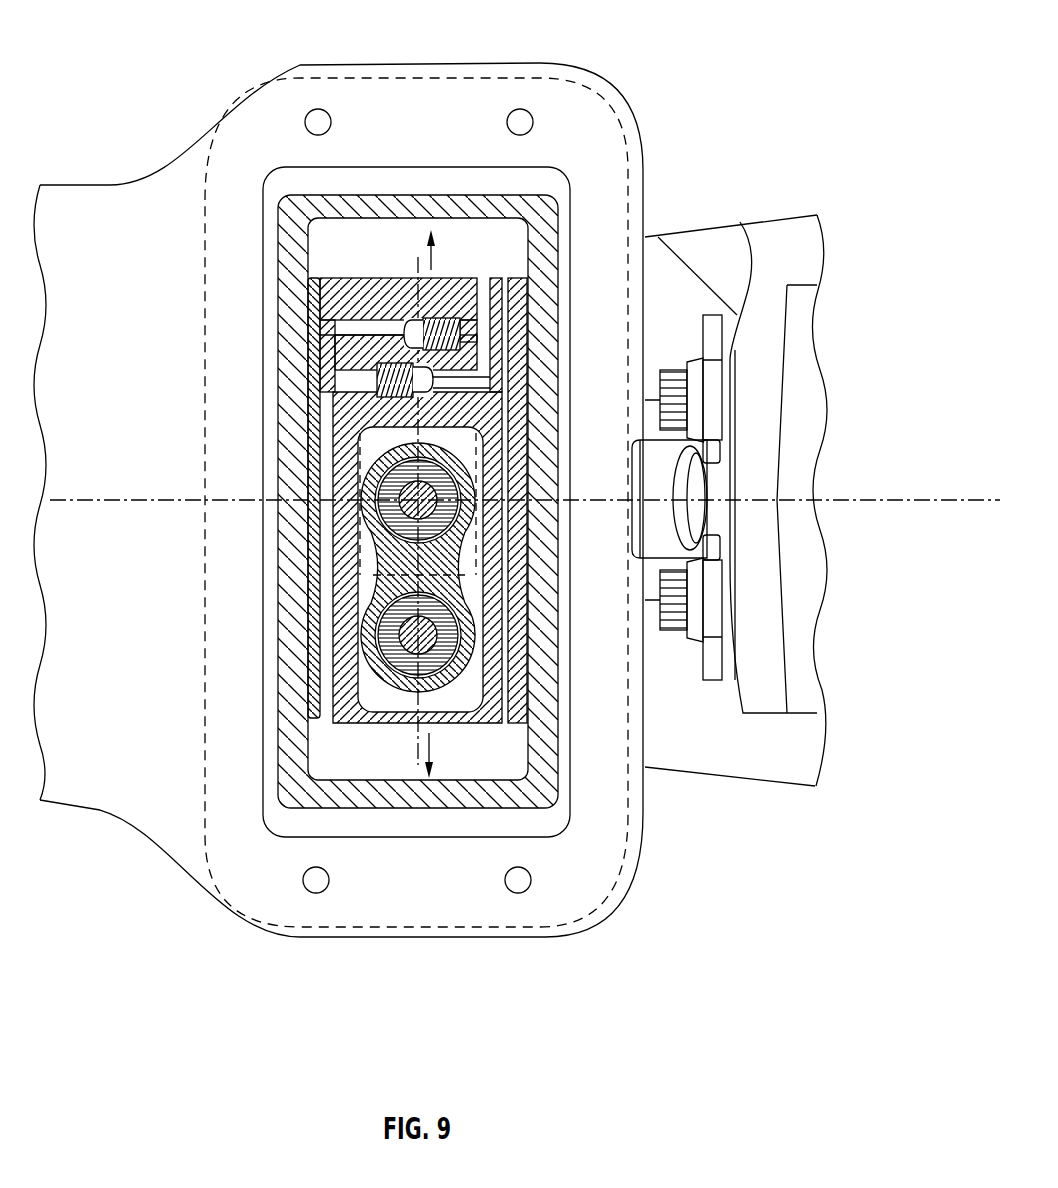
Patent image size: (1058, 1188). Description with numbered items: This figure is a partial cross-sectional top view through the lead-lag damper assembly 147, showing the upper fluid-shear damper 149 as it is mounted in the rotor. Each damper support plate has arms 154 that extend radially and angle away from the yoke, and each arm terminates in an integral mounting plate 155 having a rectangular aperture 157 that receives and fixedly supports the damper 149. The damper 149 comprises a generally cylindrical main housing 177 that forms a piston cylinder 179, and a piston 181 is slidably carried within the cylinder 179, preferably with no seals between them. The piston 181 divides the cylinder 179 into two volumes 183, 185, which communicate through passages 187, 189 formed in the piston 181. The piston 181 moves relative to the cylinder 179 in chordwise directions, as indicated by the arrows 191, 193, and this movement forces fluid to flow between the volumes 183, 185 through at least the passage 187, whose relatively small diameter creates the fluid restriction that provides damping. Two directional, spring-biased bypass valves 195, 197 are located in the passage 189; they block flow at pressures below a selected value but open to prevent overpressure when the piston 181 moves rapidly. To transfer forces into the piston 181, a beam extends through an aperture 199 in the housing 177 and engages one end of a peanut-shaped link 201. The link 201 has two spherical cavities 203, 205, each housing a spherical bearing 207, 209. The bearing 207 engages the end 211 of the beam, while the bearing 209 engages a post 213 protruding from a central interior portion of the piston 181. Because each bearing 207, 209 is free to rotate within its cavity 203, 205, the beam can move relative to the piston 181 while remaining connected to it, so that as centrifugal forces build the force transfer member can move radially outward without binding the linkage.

The lead-lag damper assembly 147 is at (300, 185).
The upper damper 149 is at (541, 185).
The arms 154 is at (120, 198).
The mounting plate 155 is at (455, 937).
The rectangular aperture 157 is at (404, 834).
The main housing 177 is at (290, 740).
The piston cylinder 179 is at (310, 265).
The piston 181 is at (378, 262).
The cylinder volume 183 is at (463, 237).
The cylinder volume 185 is at (333, 767).
The passage 187 is at (512, 350).
The passage 189 is at (306, 595).
The arrow 191 is at (435, 262).
The arrow 193 is at (433, 752).
The bypass valve 195 is at (433, 379).
The bypass valve 197 is at (392, 337).
The aperture 199 is at (368, 468).
The peanut-shaped link 201 is at (375, 518).
The spherical cavity 203 is at (457, 488).
The spherical cavity 205 is at (397, 668).
The spherical bearing 207 is at (380, 486).
The spherical bearing 209 is at (393, 650).
The end of beam 211 is at (430, 535).
The post 213 is at (437, 660).